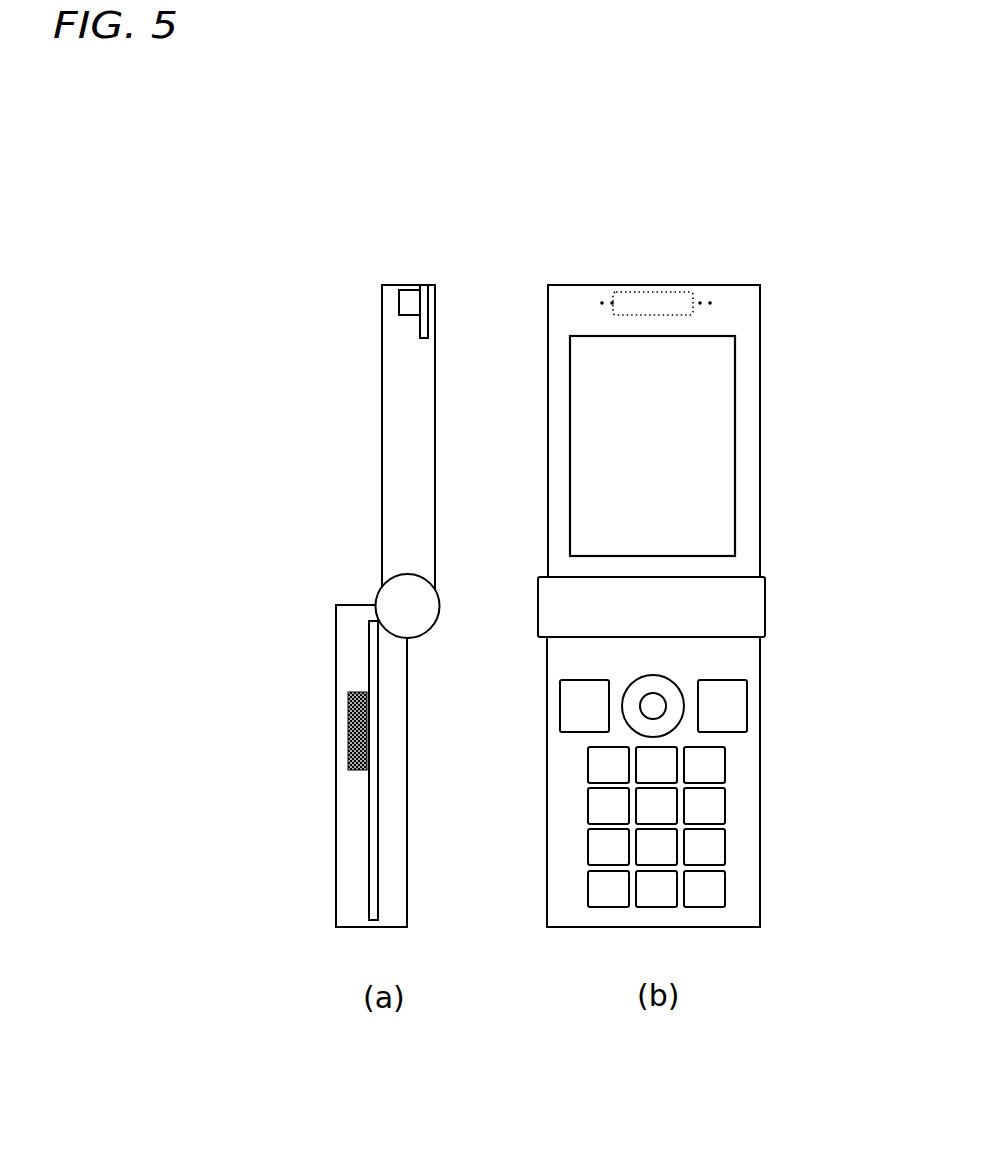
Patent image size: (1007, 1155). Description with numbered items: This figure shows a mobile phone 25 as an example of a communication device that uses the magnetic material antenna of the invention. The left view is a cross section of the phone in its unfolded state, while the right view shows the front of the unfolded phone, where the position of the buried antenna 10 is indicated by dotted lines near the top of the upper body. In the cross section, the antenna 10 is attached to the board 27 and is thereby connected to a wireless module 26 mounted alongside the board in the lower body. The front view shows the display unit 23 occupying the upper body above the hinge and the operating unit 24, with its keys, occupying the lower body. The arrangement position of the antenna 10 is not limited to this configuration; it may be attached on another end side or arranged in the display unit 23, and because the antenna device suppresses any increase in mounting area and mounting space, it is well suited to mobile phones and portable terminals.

The antenna 10 is at (612, 315).
The display unit 23 is at (748, 452).
The operating unit 24 is at (743, 838).
The mobile phone 25 is at (772, 896).
The wireless module 26 is at (360, 744).
The board 27 is at (378, 827).